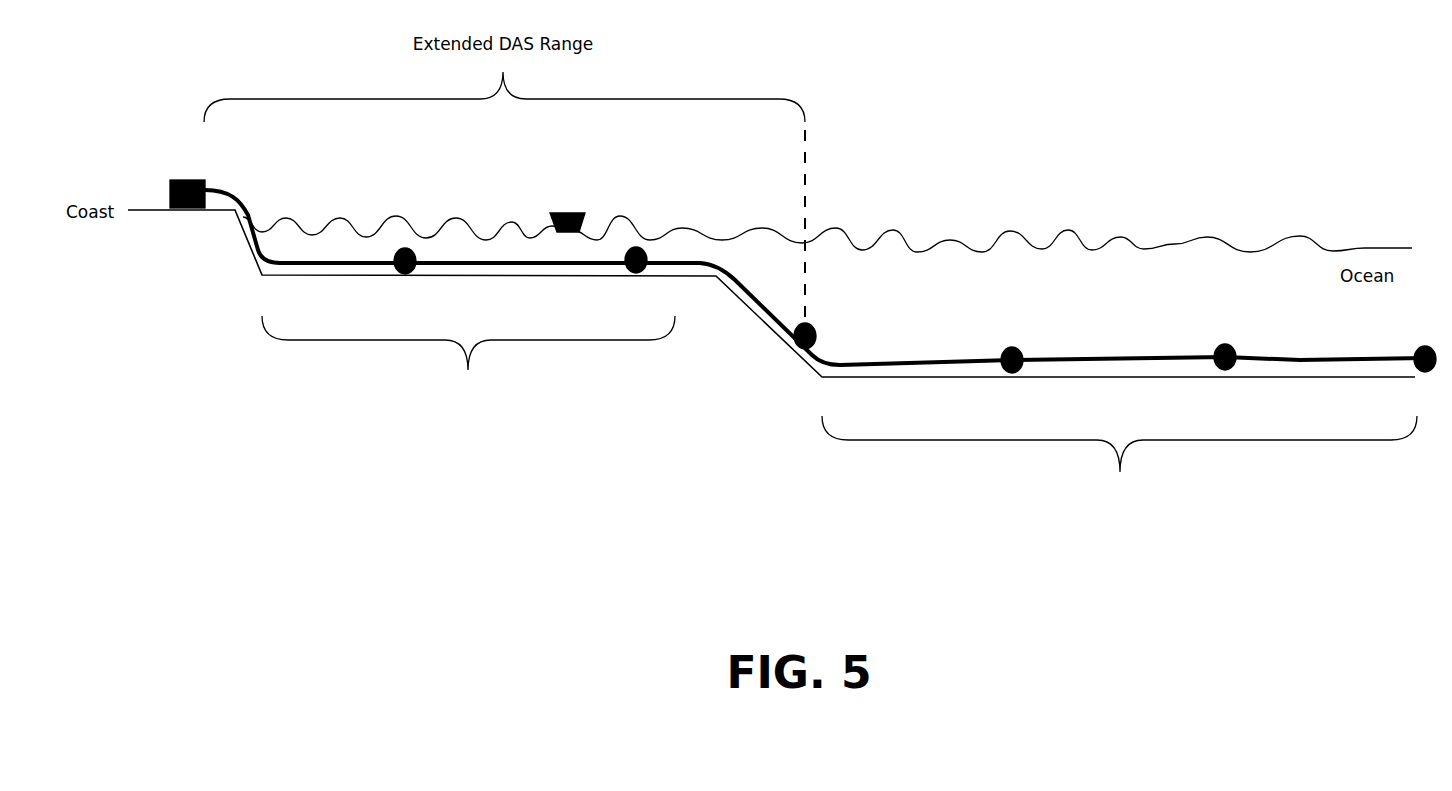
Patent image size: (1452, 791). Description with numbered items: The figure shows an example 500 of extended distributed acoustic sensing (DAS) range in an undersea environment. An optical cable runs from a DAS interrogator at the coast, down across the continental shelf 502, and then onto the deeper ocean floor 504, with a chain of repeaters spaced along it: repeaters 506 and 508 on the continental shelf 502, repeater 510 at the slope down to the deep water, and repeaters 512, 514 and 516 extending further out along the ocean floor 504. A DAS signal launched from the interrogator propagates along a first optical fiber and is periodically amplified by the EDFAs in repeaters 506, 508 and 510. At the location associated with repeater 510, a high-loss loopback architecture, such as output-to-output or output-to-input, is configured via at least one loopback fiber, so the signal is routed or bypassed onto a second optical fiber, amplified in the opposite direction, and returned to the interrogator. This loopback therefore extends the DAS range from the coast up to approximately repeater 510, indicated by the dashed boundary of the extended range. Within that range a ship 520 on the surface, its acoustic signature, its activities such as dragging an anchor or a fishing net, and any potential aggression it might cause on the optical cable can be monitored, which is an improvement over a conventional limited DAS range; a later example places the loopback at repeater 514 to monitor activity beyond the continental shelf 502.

The example of extended DAS range 500 is at (823, 630).
The continental shelf 502 is at (468, 376).
The ocean floor 504 is at (1119, 478).
The repeater 506 is at (421, 258).
The repeater 508 is at (621, 257).
The repeater 510 is at (819, 334).
The repeater 512 is at (1009, 347).
The repeater 514 is at (1224, 345).
The repeater 516 is at (1423, 347).
The ship 520 is at (567, 214).